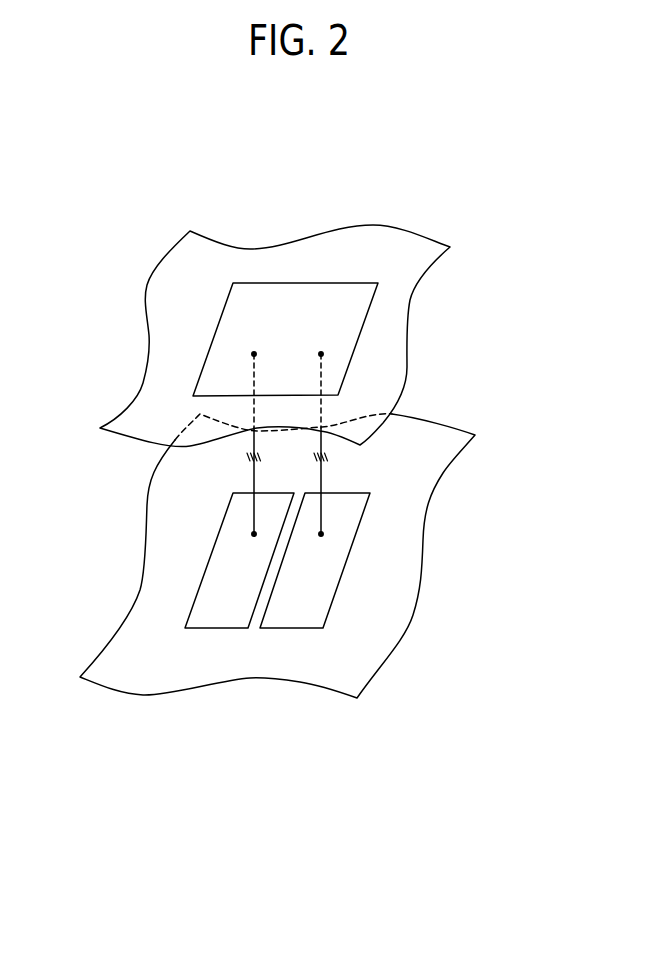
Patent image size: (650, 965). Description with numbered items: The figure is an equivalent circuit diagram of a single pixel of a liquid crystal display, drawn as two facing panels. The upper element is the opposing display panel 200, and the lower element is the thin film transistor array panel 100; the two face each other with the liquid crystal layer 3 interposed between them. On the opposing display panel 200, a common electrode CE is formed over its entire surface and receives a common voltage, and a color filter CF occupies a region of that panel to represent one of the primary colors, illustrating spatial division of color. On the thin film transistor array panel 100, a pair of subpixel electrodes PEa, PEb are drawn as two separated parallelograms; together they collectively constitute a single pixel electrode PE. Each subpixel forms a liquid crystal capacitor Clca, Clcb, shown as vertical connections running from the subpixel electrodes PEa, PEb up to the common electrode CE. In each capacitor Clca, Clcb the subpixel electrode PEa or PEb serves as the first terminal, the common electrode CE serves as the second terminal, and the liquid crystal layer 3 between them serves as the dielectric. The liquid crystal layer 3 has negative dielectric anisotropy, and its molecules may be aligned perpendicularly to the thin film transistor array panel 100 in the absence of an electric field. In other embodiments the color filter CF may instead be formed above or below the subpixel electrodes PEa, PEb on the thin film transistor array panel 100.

The liquid crystal layer 3 is at (120, 508).
The opposing display panel 200 is at (408, 342).
The common electrode CE is at (410, 302).
The color filter CF is at (350, 362).
The thin film transistor array panel 100 is at (423, 566).
The pixel electrode PE is at (288, 757).
The first subpixel electrode PEa is at (215, 630).
The second subpixel electrode PEb is at (288, 630).
The liquid crystal capacitor Clca is at (273, 444).
The liquid crystal capacitor Clcb is at (341, 444).